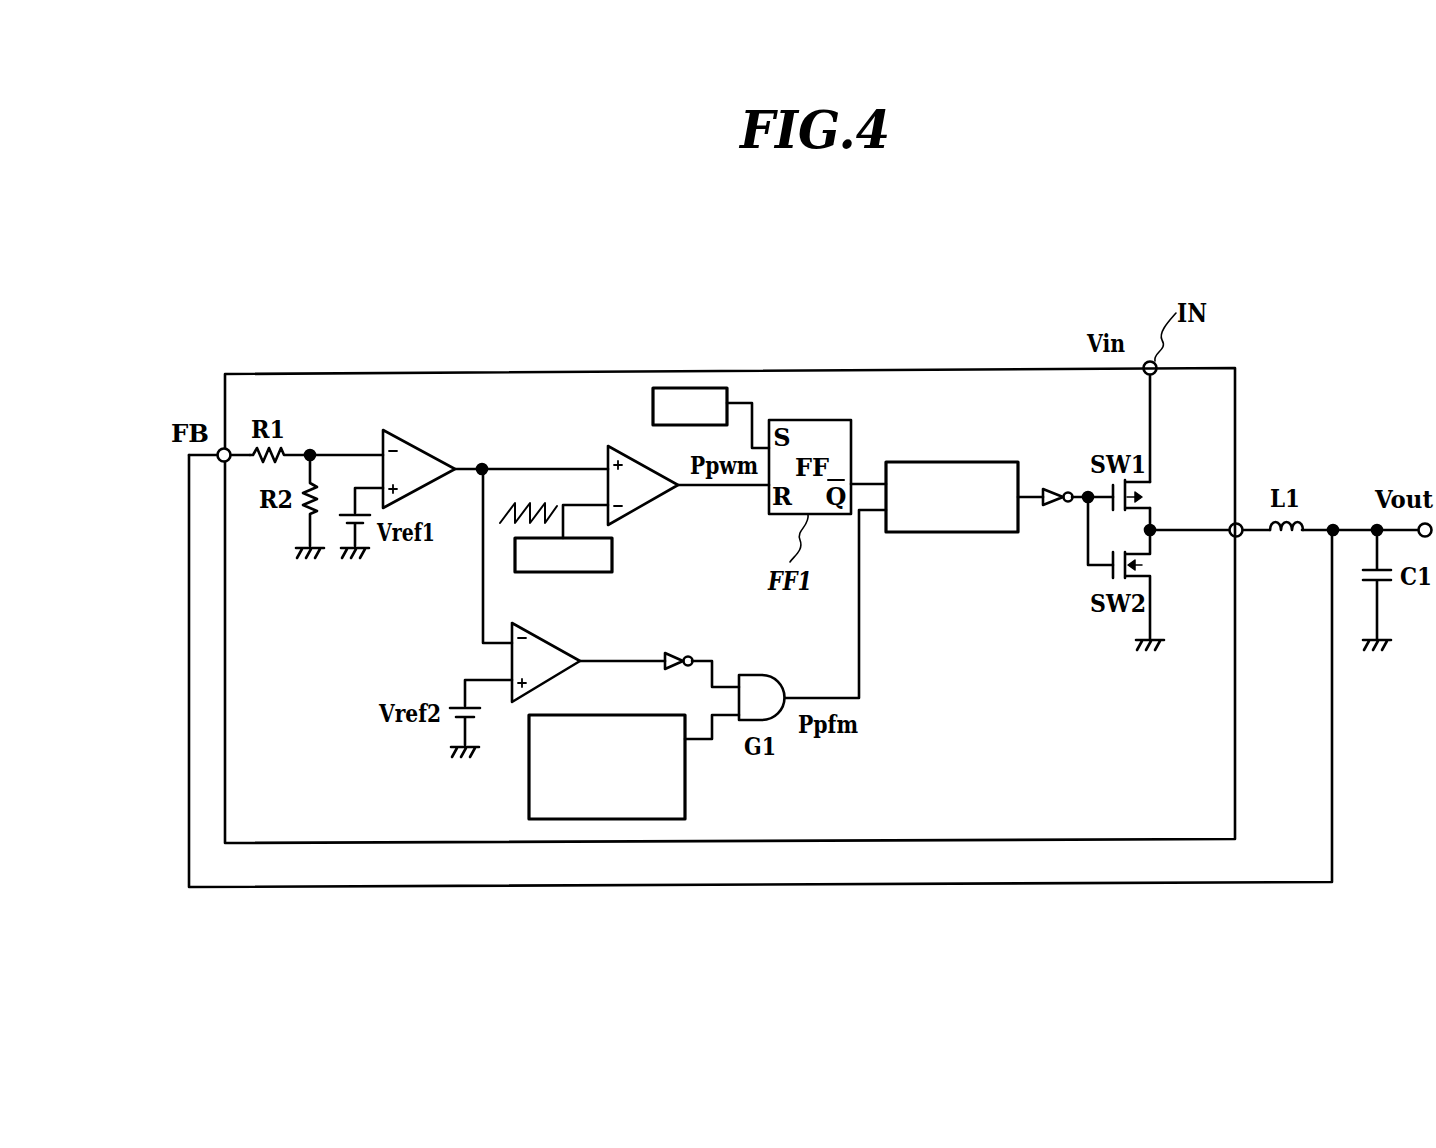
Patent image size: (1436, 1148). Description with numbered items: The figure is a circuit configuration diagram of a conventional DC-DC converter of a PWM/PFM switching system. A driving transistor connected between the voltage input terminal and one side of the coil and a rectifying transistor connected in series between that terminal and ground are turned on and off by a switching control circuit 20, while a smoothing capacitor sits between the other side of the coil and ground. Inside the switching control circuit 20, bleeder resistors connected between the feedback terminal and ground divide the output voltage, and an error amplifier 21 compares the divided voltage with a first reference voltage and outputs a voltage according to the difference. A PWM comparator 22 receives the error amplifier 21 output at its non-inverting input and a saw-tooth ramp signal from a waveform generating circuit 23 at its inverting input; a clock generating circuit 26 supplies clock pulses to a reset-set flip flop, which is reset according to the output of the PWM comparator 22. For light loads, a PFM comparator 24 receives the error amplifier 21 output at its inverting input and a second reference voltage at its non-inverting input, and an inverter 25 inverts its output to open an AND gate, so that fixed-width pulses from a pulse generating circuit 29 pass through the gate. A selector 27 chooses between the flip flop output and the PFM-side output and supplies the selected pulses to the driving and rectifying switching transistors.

The switching control circuit 20 is at (795, 369).
The error amplifier 21 is at (423, 450).
The PWM comparator 22 is at (640, 508).
The waveform generating circuit 23 is at (600, 573).
The PFM comparator 24 is at (548, 640).
The inverter 25 is at (675, 648).
The clock generating circuit 26 is at (653, 400).
The selector 27 is at (948, 532).
The pulse generating circuit 29 is at (529, 789).